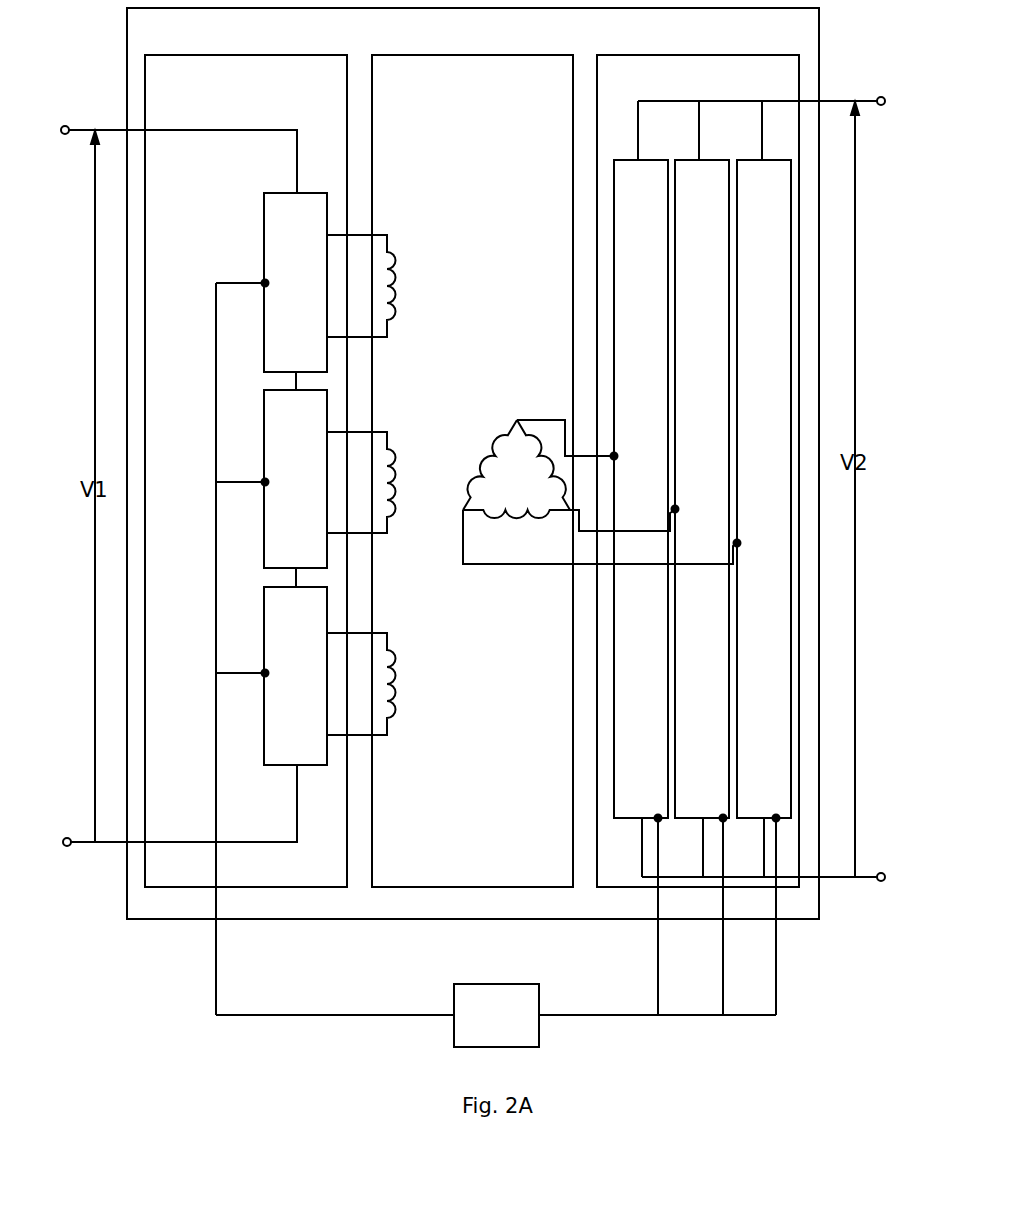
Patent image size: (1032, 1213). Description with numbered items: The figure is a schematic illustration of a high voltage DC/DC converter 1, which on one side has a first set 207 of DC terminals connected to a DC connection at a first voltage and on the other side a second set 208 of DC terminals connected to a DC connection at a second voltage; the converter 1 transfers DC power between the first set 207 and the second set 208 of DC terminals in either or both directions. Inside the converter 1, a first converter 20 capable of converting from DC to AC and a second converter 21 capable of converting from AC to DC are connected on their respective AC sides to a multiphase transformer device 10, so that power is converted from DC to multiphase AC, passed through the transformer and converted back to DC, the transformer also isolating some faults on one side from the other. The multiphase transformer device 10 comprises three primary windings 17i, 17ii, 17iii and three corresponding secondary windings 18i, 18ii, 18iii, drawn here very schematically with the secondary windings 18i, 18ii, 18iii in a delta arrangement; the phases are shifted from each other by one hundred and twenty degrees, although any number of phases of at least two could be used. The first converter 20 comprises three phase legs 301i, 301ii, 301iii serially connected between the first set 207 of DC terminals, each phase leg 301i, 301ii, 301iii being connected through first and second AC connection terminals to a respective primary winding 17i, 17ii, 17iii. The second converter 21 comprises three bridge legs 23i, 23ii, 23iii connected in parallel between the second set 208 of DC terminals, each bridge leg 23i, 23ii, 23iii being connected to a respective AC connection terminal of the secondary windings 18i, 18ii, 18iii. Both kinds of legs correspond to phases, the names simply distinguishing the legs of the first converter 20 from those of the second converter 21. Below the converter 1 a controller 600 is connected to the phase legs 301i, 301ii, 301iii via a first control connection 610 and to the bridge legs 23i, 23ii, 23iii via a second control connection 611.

The high voltage DC/DC converter 1 is at (482, 37).
The first converter 20 is at (257, 84).
The multiphase transformer device 10 is at (486, 84).
The second converter 21 is at (713, 84).
The first set of DC terminals 207 is at (78, 118).
The second set of DC terminals 208 is at (879, 97).
The phase leg 301i is at (318, 221).
The phase leg 301ii is at (321, 418).
The phase leg 301iii is at (323, 615).
The primary winding 17i is at (389, 253).
The primary winding 17ii is at (389, 450).
The primary winding 17iii is at (389, 651).
The secondary winding 18i is at (493, 450).
The secondary winding 18ii is at (528, 433).
The secondary winding 18iii is at (484, 519).
The bridge leg 23i is at (657, 189).
The bridge leg 23ii is at (720, 189).
The bridge leg 23iii is at (786, 189).
The controller 600 is at (496, 1015).
The first control connection 610 is at (407, 1017).
The second control connection 611 is at (618, 1017).